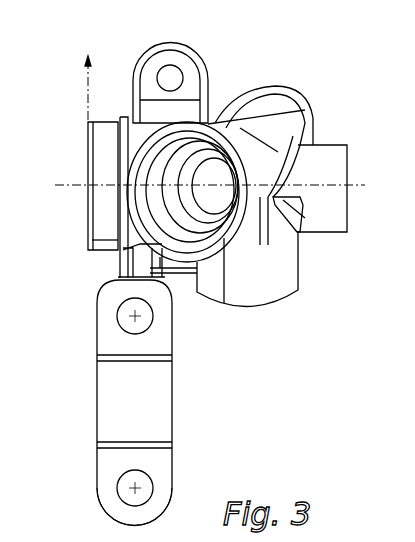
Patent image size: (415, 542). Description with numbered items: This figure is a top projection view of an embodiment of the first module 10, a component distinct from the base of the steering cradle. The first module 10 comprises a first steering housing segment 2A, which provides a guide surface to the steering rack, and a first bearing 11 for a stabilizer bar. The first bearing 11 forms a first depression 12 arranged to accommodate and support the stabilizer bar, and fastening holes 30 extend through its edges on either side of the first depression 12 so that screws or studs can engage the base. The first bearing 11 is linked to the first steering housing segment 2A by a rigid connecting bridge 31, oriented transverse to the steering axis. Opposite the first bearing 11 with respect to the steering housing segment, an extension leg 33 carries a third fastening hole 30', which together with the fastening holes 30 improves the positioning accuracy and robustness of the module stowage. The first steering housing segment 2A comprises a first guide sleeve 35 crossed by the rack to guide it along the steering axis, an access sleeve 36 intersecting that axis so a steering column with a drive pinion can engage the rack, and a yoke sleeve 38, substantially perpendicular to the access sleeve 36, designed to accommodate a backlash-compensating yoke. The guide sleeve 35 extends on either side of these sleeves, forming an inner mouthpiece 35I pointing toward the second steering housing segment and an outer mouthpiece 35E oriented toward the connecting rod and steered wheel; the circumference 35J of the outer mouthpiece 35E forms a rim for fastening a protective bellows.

The first module 10 is at (214, 273).
The first bearing 11 is at (158, 468).
The first depression 12 is at (143, 398).
The first steering housing segment 2A is at (152, 134).
The fastening holes 30 is at (96, 402).
The third fastening hole 30' is at (193, 56).
The connecting bridge 31 is at (127, 265).
The extension leg 33 is at (188, 71).
The first guide sleeve 35 is at (328, 140).
The outer mouthpiece 35E is at (88, 215).
The inner mouthpiece 35I is at (400, 237).
The circumference of the outer mouthpiece 35J is at (100, 145).
The access sleeve 36 is at (187, 250).
The yoke sleeve 38 is at (283, 275).